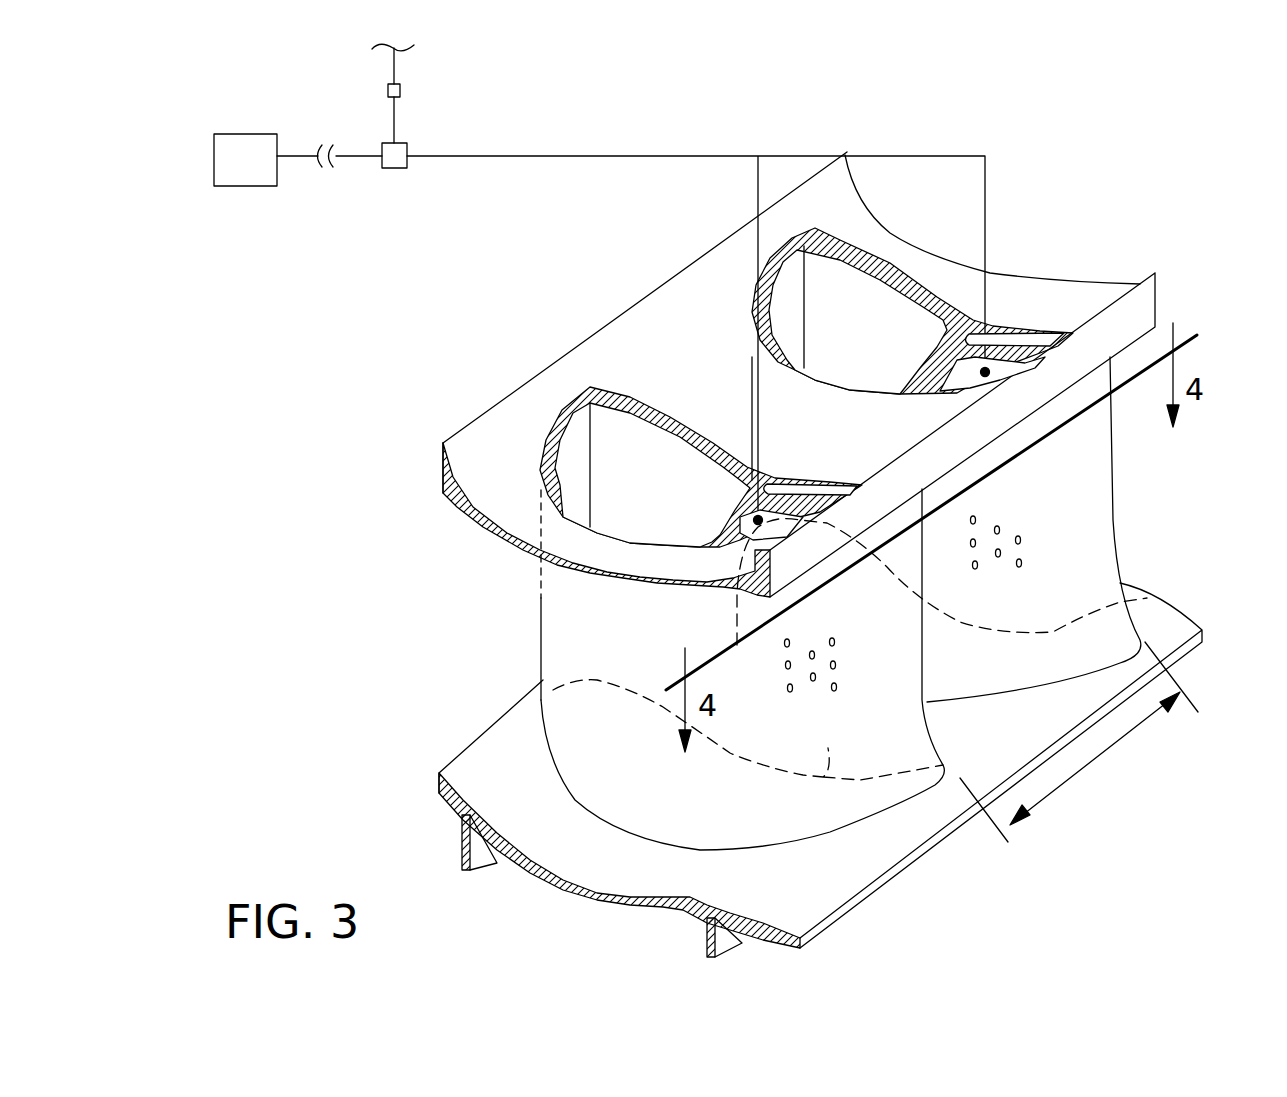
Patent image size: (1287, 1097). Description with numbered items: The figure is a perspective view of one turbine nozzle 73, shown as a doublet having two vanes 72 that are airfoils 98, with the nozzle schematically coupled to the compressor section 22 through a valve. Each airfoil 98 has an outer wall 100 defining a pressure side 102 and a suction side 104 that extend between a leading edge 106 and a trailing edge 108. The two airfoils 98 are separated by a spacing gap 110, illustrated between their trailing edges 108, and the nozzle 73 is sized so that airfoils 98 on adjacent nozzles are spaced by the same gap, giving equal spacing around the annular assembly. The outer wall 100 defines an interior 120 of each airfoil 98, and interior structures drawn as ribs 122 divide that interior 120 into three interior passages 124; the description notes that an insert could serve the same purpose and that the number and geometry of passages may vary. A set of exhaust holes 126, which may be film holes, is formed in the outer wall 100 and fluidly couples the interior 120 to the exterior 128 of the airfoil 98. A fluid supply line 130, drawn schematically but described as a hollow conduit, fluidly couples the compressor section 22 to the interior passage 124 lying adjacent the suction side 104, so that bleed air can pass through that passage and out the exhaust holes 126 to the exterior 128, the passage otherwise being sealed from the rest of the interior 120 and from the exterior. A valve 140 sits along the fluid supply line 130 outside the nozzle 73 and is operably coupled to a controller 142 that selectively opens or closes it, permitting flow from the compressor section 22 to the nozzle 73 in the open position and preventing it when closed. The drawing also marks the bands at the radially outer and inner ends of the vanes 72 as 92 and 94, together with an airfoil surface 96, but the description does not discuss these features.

The compressor section 22 is at (262, 175).
The valve 140 is at (390, 142).
The controller 142 is at (401, 91).
The fluid supply line 130 is at (598, 156).
The vane 72 is at (530, 657).
The turbine nozzle 73 is at (452, 416).
The outer band 92 is at (500, 527).
The inner band 94 is at (547, 883).
The suction side 96 is at (1128, 495).
The airfoil 98 is at (1112, 472).
The outer wall 100 is at (570, 613).
The pressure side 102 is at (1165, 600).
The suction side 104 is at (700, 852).
The leading edge 106 is at (747, 363).
The trailing edge 108 is at (1117, 517).
The spacing gap 110 is at (1092, 763).
The interior 120 is at (878, 305).
The rib 122 is at (1010, 347).
The interior passage 124 is at (812, 292).
The exhaust hole 126 is at (1017, 517).
The exterior 128 is at (326, 711).